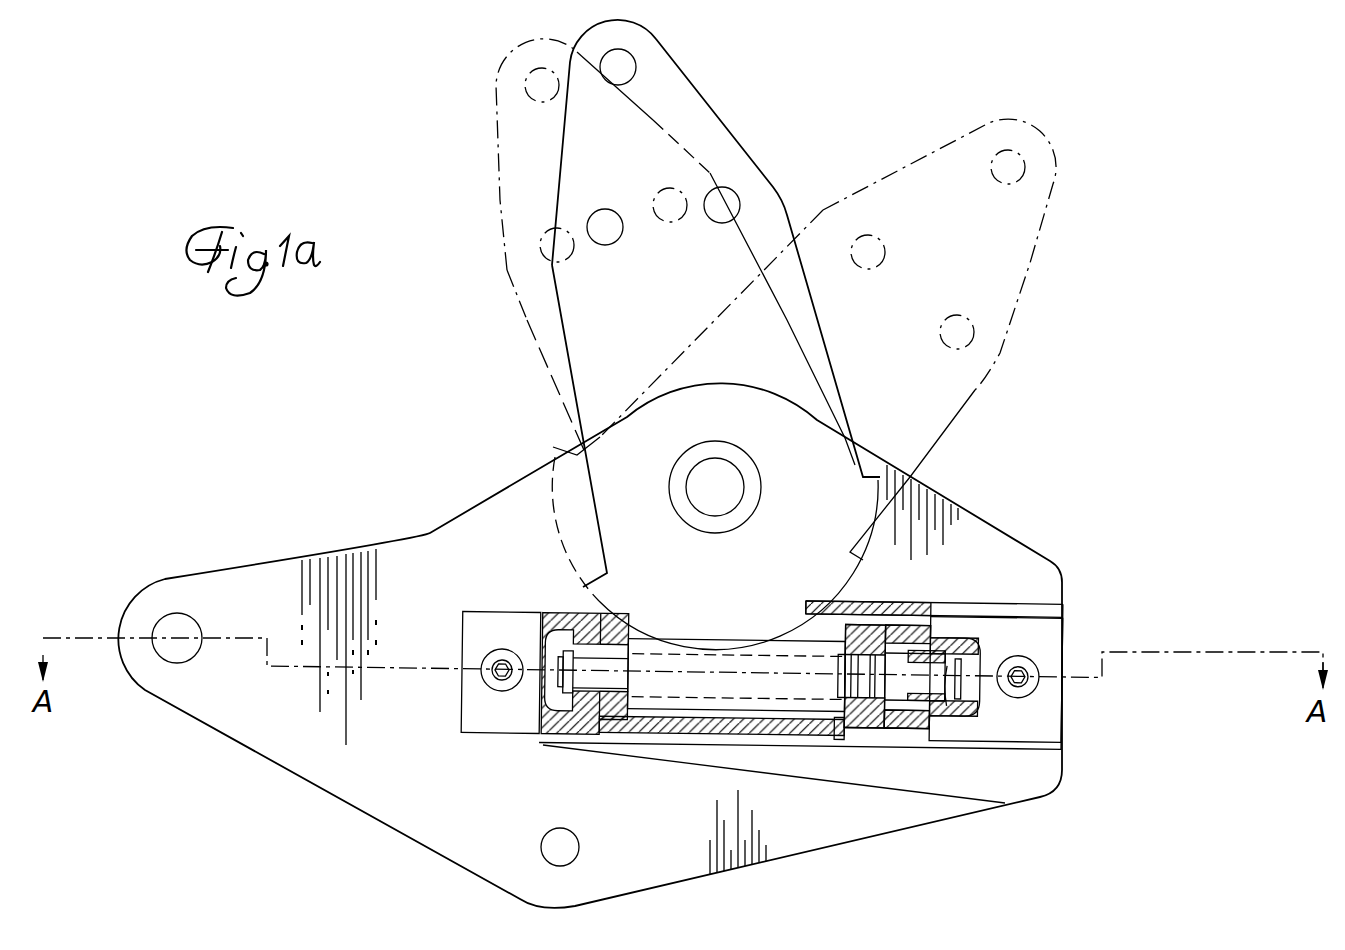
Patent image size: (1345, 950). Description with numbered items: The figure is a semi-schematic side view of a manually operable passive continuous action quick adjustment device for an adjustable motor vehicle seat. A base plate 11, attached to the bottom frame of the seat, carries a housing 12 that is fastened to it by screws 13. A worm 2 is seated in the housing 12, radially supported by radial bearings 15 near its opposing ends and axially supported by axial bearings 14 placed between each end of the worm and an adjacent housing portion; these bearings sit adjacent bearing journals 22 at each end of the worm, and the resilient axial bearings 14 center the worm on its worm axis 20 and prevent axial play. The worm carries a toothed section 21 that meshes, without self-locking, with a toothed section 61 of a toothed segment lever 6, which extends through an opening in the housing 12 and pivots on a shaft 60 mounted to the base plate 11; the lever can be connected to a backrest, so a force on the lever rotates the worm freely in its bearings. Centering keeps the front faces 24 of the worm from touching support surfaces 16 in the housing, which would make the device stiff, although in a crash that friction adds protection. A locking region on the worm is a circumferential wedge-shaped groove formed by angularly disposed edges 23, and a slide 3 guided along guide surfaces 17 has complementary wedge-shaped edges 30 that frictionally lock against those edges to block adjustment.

The worm 2 is at (690, 655).
The slide 3 is at (862, 626).
The toothed segment lever 6 is at (717, 145).
The base plate 11 is at (297, 608).
The housing 12 is at (713, 737).
The screws 13 is at (540, 666).
The axial bearings 14 is at (547, 667).
The radial bearings 15 is at (590, 640).
The support surfaces 16 is at (608, 640).
The guide surfaces 17 is at (831, 733).
The worm axis 20 is at (757, 652).
The toothed section 21 is at (648, 652).
The bearing journals 22 is at (600, 730).
The angularly disposed edges 23 is at (830, 650).
The front faces 24 is at (647, 737).
The wedge-shaped edges 30 is at (862, 725).
The shaft 60 is at (724, 480).
The toothed section 61 is at (620, 599).